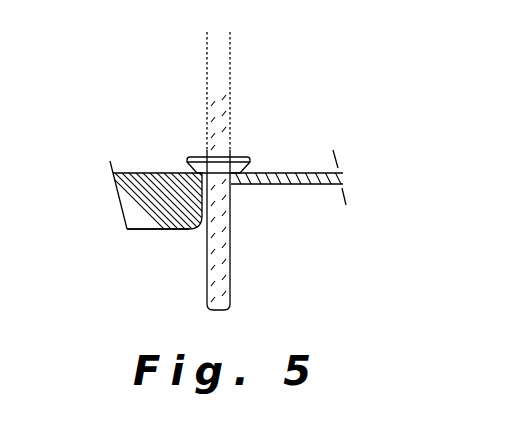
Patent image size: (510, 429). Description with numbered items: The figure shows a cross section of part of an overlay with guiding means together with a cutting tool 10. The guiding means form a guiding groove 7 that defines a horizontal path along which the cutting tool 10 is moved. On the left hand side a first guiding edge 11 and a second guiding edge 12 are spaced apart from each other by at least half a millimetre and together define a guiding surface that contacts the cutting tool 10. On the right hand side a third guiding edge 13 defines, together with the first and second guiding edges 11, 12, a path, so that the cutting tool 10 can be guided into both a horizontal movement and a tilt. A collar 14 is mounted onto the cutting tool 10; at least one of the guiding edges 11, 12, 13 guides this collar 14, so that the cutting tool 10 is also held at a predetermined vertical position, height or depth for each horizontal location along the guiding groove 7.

The guiding groove 7 is at (178, 97).
The cutting tool 10 is at (231, 120).
The first guiding edge 11 is at (189, 172).
The second guiding edge 12 is at (193, 228).
The third guiding edge 13 is at (240, 171).
The collar 14 is at (200, 162).